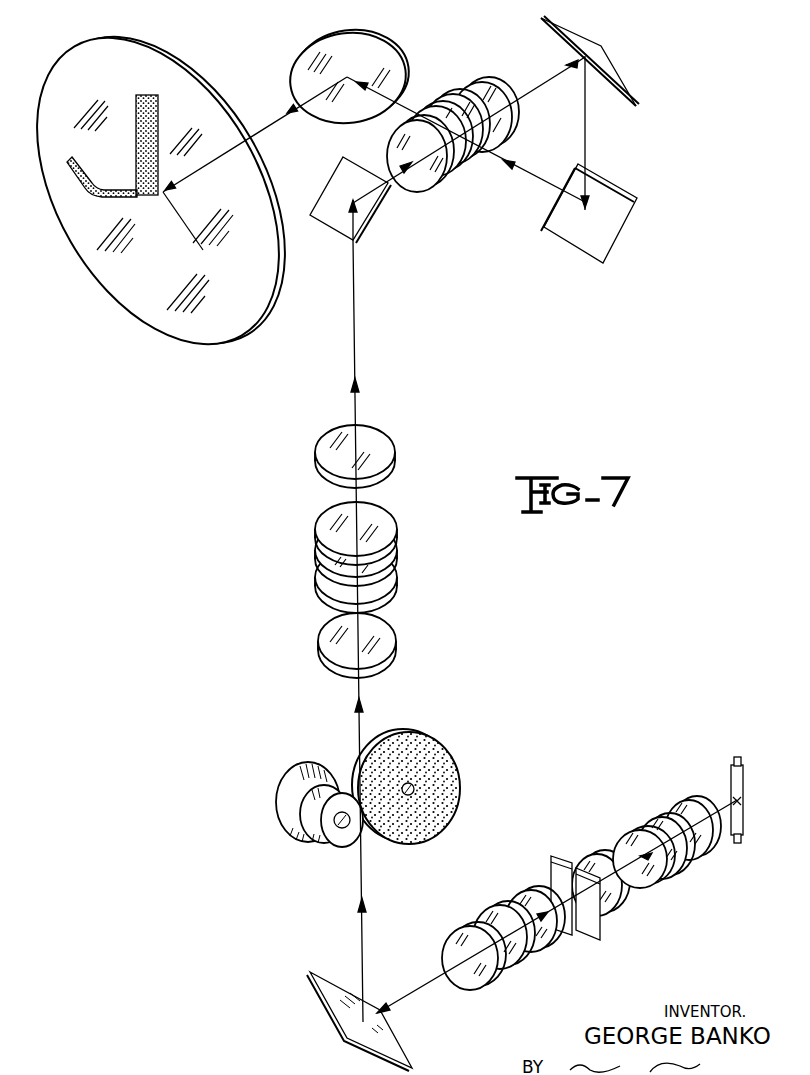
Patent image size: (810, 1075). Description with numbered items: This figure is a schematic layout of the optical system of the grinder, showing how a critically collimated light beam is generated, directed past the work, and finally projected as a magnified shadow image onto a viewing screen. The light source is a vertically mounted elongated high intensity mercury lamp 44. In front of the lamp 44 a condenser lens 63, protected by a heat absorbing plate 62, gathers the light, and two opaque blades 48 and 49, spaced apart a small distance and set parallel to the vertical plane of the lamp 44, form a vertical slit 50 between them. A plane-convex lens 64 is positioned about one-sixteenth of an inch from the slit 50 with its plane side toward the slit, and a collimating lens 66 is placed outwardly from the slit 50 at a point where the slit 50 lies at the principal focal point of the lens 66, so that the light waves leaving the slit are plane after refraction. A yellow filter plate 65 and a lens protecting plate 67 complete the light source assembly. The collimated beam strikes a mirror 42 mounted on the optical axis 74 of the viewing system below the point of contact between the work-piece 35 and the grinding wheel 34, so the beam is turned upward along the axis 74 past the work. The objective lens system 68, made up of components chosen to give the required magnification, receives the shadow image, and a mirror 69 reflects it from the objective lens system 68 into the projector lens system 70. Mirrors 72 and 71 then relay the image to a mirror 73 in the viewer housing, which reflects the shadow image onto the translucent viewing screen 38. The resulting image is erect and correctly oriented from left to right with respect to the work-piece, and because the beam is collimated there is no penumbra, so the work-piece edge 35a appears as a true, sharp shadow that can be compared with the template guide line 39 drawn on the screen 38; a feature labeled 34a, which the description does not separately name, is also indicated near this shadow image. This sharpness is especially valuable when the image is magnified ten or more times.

The grinding wheel 34 is at (437, 750).
The opaque sector of chopper disc 34a is at (160, 132).
The work-piece 35 is at (282, 804).
The work-piece edge 35a is at (98, 182).
The translucent viewing screen 38 is at (202, 340).
The template guide line 39 is at (177, 225).
The mirror 42 is at (334, 984).
The mercury lamp 44 is at (746, 776).
The opaque blade 48 is at (593, 891).
The opaque blade 49 is at (554, 868).
The vertical slit 50 is at (579, 876).
The heat absorbing plate 62 is at (664, 800).
The condenser lens 63 is at (668, 884).
The plane-convex lens 64 is at (594, 860).
The yellow filter plate 65 is at (522, 902).
The collimating lens 66 is at (480, 920).
The lens protecting plate 67 is at (446, 945).
The objective lens system 68 is at (312, 512).
The mirror 69 is at (368, 212).
The projector lens system 70 is at (510, 157).
The mirror 71 is at (620, 202).
The mirror 72 is at (610, 78).
The mirror 73 is at (378, 53).
The optical axis 74 is at (276, 132).